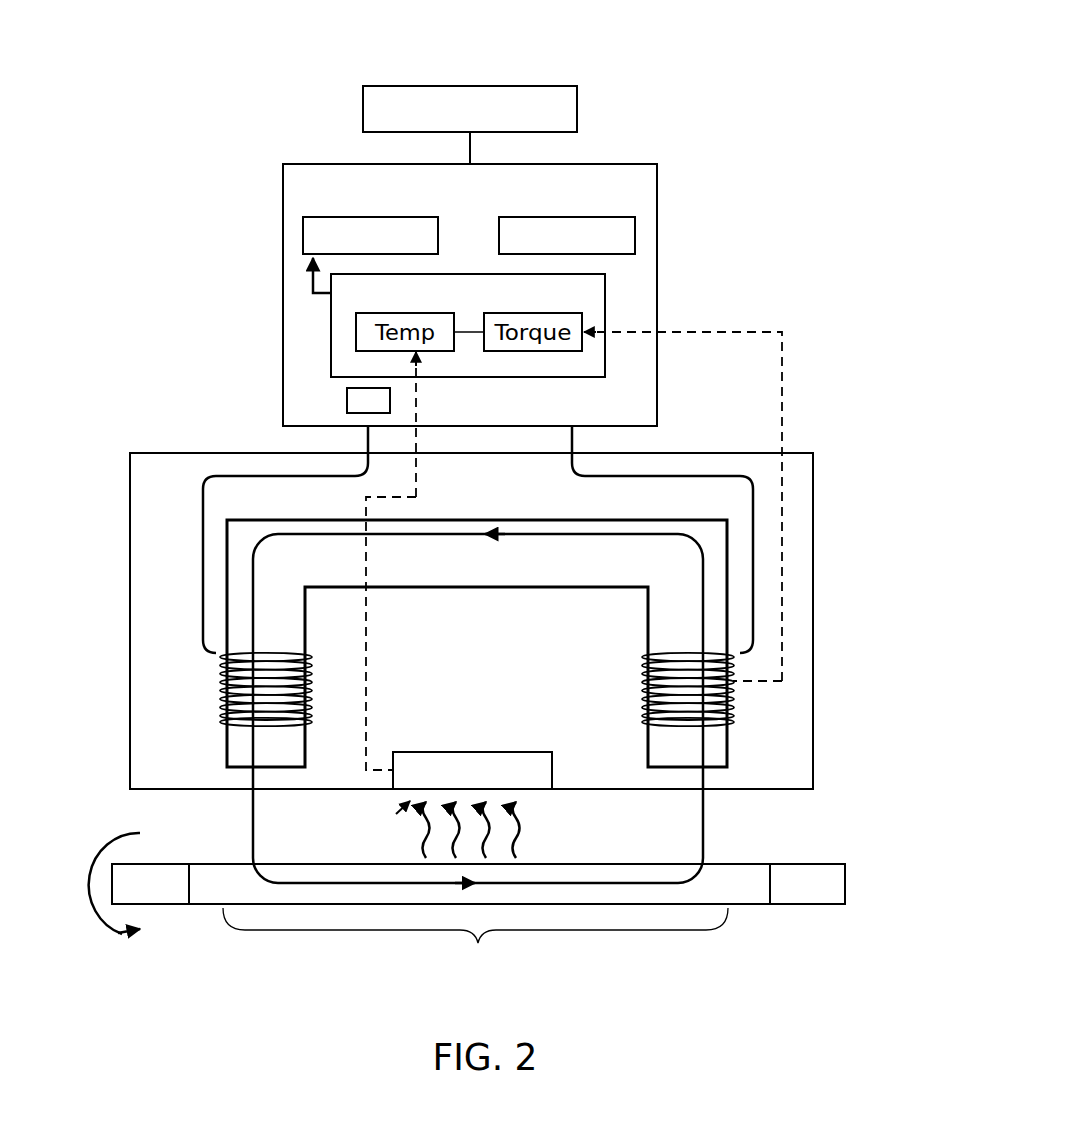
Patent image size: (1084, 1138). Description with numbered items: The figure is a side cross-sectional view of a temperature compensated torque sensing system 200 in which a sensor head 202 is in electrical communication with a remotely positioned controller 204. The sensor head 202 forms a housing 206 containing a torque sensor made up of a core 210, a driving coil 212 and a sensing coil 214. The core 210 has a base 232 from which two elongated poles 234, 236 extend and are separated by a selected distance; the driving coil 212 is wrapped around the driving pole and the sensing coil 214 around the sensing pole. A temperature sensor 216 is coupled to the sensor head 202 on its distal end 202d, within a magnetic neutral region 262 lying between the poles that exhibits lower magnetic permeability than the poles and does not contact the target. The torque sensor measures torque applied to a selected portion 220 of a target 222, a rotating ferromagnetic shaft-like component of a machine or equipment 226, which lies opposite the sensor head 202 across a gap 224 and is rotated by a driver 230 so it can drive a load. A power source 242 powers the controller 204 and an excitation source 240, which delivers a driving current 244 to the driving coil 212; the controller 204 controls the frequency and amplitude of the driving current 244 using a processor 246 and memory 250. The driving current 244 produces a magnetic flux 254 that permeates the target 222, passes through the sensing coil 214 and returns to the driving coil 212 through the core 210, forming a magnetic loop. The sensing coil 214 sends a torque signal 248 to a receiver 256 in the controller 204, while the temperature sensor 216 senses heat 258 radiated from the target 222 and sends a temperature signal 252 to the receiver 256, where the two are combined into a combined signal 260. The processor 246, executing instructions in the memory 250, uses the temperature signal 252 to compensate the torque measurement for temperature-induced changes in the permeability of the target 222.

The temperature compensated torque sensing system 200 is at (700, 48).
The sensor head 202 is at (118, 503).
The distal end 202d is at (822, 787).
The controller 204 is at (658, 178).
The housing 206 is at (814, 600).
The core 210 is at (608, 520).
The driving coil 212 is at (242, 721).
The sensing coil 214 is at (733, 712).
The temperature sensor 216 is at (553, 770).
The selected portion 220 is at (534, 922).
The target 222 is at (644, 864).
The gap 224 is at (712, 832).
The machine or equipment 226 is at (82, 862).
The driver 230 is at (166, 905).
The base 232 is at (483, 570).
The first pole 234 is at (238, 790).
The second pole 236 is at (710, 767).
The excitation source 240 is at (347, 400).
The power source 242 is at (578, 108).
The driving current 244 is at (250, 476).
The processor 246 is at (303, 234).
The torque signal 248 is at (768, 332).
The memory 250 is at (636, 236).
The temperature signal 252 is at (417, 490).
The magnetic flux 254 is at (304, 534).
The receiver 256 is at (330, 326).
The heat 258 is at (518, 831).
The combined signal 260 is at (313, 293).
The magnetic neutral region 262 is at (398, 812).